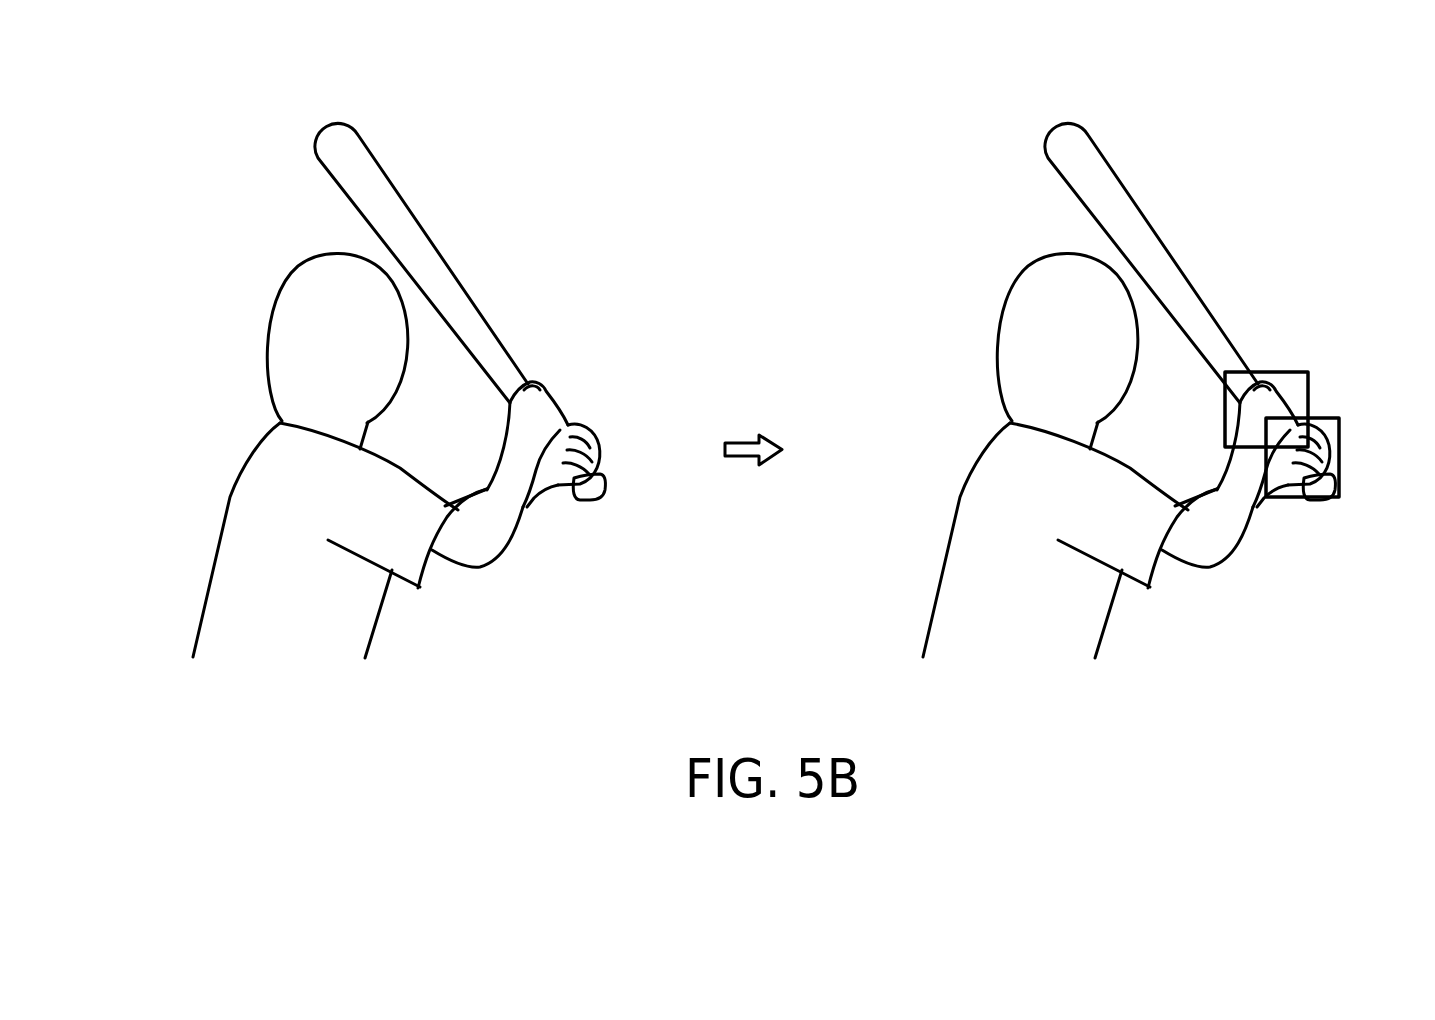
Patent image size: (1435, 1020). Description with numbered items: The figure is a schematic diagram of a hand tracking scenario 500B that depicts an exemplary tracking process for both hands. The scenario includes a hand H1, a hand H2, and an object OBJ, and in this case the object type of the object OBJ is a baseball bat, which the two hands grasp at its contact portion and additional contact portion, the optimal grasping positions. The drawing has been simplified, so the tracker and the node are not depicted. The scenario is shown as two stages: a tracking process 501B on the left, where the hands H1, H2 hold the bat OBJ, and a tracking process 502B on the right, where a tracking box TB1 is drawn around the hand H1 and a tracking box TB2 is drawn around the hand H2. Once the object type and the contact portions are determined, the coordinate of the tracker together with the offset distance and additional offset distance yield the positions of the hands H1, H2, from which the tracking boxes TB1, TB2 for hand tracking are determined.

The hand tracking scenario 500B is at (1398, 717).
The tracking process 501B is at (210, 126).
The tracking process 502B is at (940, 126).
The object OBJ is at (430, 260).
The hand H1 is at (587, 434).
The hand H2 is at (543, 387).
The tracking box TB1 is at (1342, 467).
The tracking box TB2 is at (1278, 371).